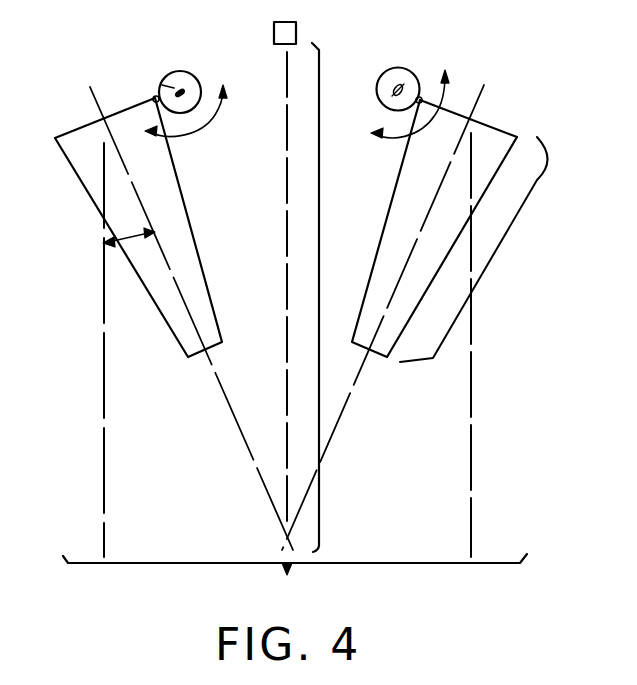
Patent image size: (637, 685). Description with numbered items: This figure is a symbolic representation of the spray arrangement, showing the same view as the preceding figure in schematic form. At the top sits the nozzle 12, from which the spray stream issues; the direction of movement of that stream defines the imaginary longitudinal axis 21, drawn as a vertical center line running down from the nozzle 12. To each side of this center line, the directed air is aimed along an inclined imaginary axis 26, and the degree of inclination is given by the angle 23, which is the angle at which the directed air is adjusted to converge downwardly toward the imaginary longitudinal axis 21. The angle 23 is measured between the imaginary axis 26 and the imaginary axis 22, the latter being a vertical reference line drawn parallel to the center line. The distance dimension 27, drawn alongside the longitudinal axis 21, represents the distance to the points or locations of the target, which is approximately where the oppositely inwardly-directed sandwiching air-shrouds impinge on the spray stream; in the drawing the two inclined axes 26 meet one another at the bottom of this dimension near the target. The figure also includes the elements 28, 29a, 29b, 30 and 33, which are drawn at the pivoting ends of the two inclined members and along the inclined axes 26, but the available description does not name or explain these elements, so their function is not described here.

The nozzle 12 is at (291, 23).
The imaginary longitudinal axis 21 is at (287, 295).
The imaginary axis 22 is at (103, 397).
The angle 23 is at (131, 240).
The imaginary axis 26 is at (168, 261).
The distance dimension 27 is at (320, 152).
The support member 28 is at (491, 262).
The first motor 29a is at (184, 75).
The second motor 29b is at (392, 68).
The pivot 30 is at (155, 96).
The arm position 33 is at (241, 380).